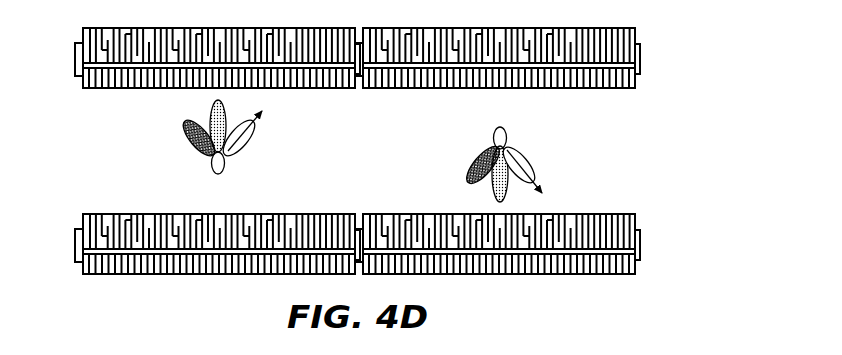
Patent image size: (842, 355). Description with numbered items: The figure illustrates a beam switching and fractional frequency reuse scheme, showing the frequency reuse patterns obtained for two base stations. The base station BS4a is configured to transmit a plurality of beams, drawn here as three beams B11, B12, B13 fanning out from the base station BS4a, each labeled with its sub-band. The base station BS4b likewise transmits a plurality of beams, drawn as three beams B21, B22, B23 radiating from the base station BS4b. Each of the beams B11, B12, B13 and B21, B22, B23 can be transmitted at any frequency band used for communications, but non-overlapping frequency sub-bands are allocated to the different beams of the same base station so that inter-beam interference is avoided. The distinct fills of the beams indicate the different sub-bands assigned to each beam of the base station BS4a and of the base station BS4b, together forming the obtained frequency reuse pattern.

The beam B11 is at (187, 122).
The beam B12 is at (276, 101).
The beam B13 is at (234, 156).
The base station BS4a is at (224, 172).
The beam B21 is at (467, 184).
The beam B22 is at (500, 201).
The beam B23 is at (545, 191).
The base station BS4b is at (506, 131).